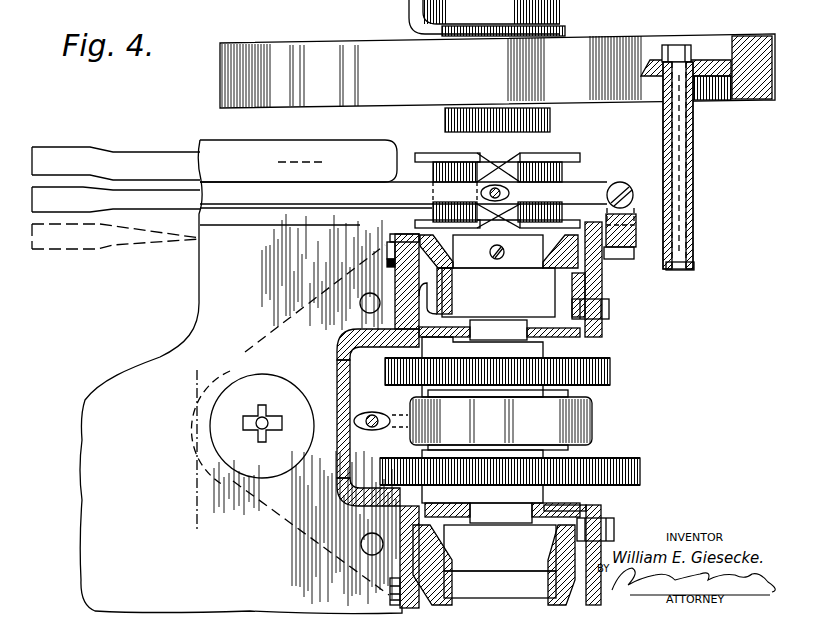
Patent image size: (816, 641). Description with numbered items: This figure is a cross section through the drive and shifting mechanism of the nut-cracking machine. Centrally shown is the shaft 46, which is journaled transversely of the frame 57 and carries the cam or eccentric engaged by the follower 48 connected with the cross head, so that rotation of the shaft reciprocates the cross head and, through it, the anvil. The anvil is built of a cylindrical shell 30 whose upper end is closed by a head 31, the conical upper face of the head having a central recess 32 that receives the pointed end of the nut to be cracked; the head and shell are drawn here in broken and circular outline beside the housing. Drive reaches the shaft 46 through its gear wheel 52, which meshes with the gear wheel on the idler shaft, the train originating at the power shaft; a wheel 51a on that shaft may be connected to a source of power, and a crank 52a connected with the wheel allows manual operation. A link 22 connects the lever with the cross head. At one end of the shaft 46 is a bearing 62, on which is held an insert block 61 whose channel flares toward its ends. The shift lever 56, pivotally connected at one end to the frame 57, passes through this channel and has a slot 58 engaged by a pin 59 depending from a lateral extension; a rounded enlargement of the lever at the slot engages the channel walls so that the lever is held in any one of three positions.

The link 22 is at (369, 413).
The cylindrical shell 30 is at (227, 461).
The head 31 is at (237, 391).
The central recess 32 is at (253, 427).
The shaft 46 is at (527, 321).
The follower 48 is at (591, 418).
The wheel 51a is at (697, 38).
The gear wheel 52 is at (611, 370).
The crank 52a is at (691, 133).
The shift lever 56 is at (123, 193).
The frame 57 is at (614, 186).
The slot 58 is at (507, 193).
The pin 59 is at (506, 166).
The insert block 61 is at (484, 157).
The bearing 62 is at (432, 171).